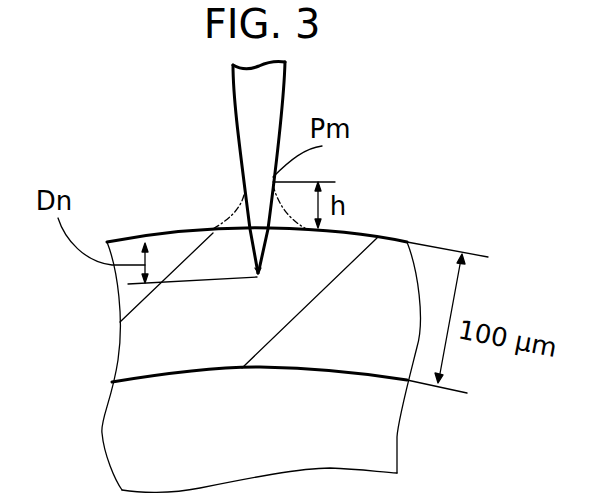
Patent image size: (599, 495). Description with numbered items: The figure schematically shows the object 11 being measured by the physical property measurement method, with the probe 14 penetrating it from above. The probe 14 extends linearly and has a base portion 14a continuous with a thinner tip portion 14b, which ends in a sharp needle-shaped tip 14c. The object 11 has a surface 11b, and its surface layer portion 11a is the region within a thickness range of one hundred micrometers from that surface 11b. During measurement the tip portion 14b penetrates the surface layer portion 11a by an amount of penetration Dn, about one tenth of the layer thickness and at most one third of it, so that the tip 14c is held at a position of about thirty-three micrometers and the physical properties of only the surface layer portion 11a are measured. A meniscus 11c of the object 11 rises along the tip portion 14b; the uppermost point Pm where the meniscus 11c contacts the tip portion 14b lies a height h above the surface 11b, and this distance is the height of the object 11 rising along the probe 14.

The object 11 is at (80, 295).
The surface layer portion 11a is at (140, 345).
The surface 11b is at (385, 237).
The meniscus 11c is at (222, 205).
The probe 14 is at (242, 193).
The base portion 14a is at (285, 83).
The tip portion 14b is at (252, 138).
The tip 14c is at (256, 276).